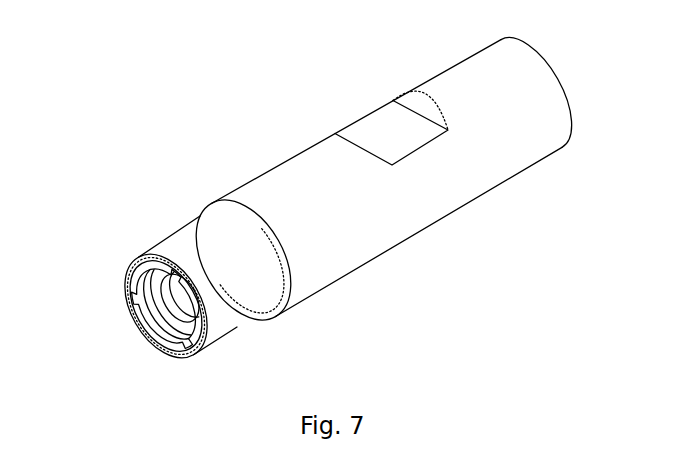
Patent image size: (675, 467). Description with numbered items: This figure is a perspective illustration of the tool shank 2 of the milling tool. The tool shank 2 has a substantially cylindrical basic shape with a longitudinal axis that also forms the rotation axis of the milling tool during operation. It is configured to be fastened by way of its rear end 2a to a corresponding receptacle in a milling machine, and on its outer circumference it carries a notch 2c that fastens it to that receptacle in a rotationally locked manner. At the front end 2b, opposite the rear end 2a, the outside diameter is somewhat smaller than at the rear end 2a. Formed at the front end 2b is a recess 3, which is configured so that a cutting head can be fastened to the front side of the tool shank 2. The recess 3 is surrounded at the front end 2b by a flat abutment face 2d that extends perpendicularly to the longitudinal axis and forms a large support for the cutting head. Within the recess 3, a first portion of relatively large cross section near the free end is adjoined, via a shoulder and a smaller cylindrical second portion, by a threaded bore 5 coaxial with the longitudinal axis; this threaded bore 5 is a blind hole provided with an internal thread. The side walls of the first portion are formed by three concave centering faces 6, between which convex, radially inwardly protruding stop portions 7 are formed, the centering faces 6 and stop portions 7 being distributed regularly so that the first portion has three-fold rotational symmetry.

The tool shank 2 is at (266, 108).
The rear end 2a is at (548, 93).
The front end 2b is at (178, 245).
The notch 2c is at (370, 130).
The flat abutment face 2d is at (178, 353).
The recess 3 is at (111, 327).
The threaded bore 5 is at (183, 300).
The centering faces 6 is at (148, 312).
The stop portions 7 is at (142, 287).